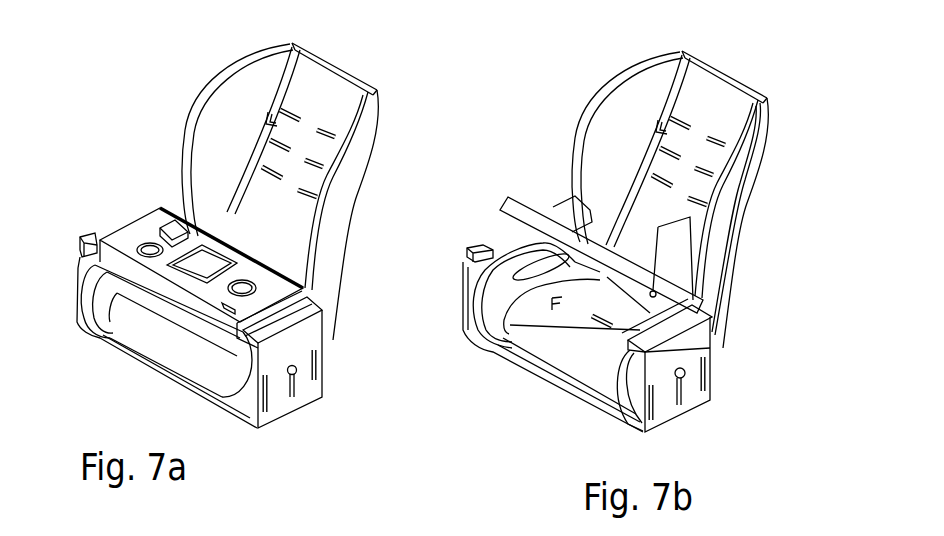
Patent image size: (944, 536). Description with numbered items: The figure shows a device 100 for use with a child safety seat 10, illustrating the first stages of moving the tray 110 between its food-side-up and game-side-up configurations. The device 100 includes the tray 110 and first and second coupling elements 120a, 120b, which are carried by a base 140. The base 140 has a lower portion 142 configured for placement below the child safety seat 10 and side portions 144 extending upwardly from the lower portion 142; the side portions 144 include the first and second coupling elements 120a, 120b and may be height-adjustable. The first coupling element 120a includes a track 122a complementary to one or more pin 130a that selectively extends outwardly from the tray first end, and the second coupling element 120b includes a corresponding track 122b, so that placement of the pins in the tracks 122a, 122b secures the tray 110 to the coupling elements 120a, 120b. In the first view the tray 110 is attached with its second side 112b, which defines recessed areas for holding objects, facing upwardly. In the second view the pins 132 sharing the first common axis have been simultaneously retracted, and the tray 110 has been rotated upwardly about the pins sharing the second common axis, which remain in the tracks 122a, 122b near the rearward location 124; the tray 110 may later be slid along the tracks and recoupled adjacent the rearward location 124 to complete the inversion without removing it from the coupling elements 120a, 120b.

In FIG. 7A, the child safety seat 10 is at (345, 61).
In FIG. 7B, the child safety seat 10 is at (727, 66).
In FIG. 7A, the device 100 is at (349, 423).
In FIG. 7B, the device 100 is at (757, 414).
In FIG. 7A, the tray 110 is at (293, 268).
In FIG. 7B, the tray 110 is at (549, 211).
In FIG. 7A, the second side 112b is at (142, 230).
In FIG. 7B, the second side 112b is at (523, 203).
In FIG. 7A, the first coupling element 120a is at (282, 315).
In FIG. 7A, the second coupling element 120b is at (110, 232).
In FIG. 7B, the first track 122a is at (618, 333).
In FIG. 7B, the second track 122b is at (490, 248).
In FIG. 7B, the rearward location 124 is at (688, 312).
In FIG. 7B, the pin 130a is at (654, 296).
In FIG. 7B, the pins sharing the first common axis 132 is at (660, 228).
In FIG. 7A, the base 140 is at (273, 430).
In FIG. 7B, the base 140 is at (696, 415).
In FIG. 7B, the lower portion 142 is at (570, 395).
In FIG. 7B, the side portions 144 is at (716, 375).